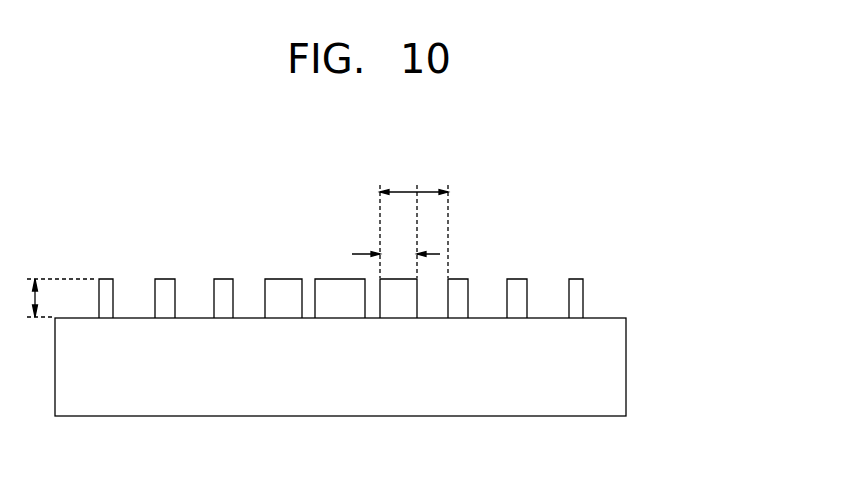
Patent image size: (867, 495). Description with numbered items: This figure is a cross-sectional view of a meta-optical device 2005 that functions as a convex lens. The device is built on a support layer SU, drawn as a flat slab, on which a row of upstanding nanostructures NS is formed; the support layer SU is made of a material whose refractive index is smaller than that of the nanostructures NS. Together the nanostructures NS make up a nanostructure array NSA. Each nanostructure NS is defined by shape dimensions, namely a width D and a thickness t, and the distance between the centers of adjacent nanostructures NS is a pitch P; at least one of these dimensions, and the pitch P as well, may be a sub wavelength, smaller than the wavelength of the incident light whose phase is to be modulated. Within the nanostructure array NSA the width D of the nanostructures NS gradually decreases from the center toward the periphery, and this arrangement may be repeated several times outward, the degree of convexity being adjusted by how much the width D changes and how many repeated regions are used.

The meta-optical device 2005 is at (652, 208).
The nanostructure NS is at (517, 279).
The nanostructure array NSA is at (409, 272).
The support layer SU is at (613, 370).
The pitch P is at (414, 219).
The width D is at (396, 242).
The thickness t is at (54, 298).